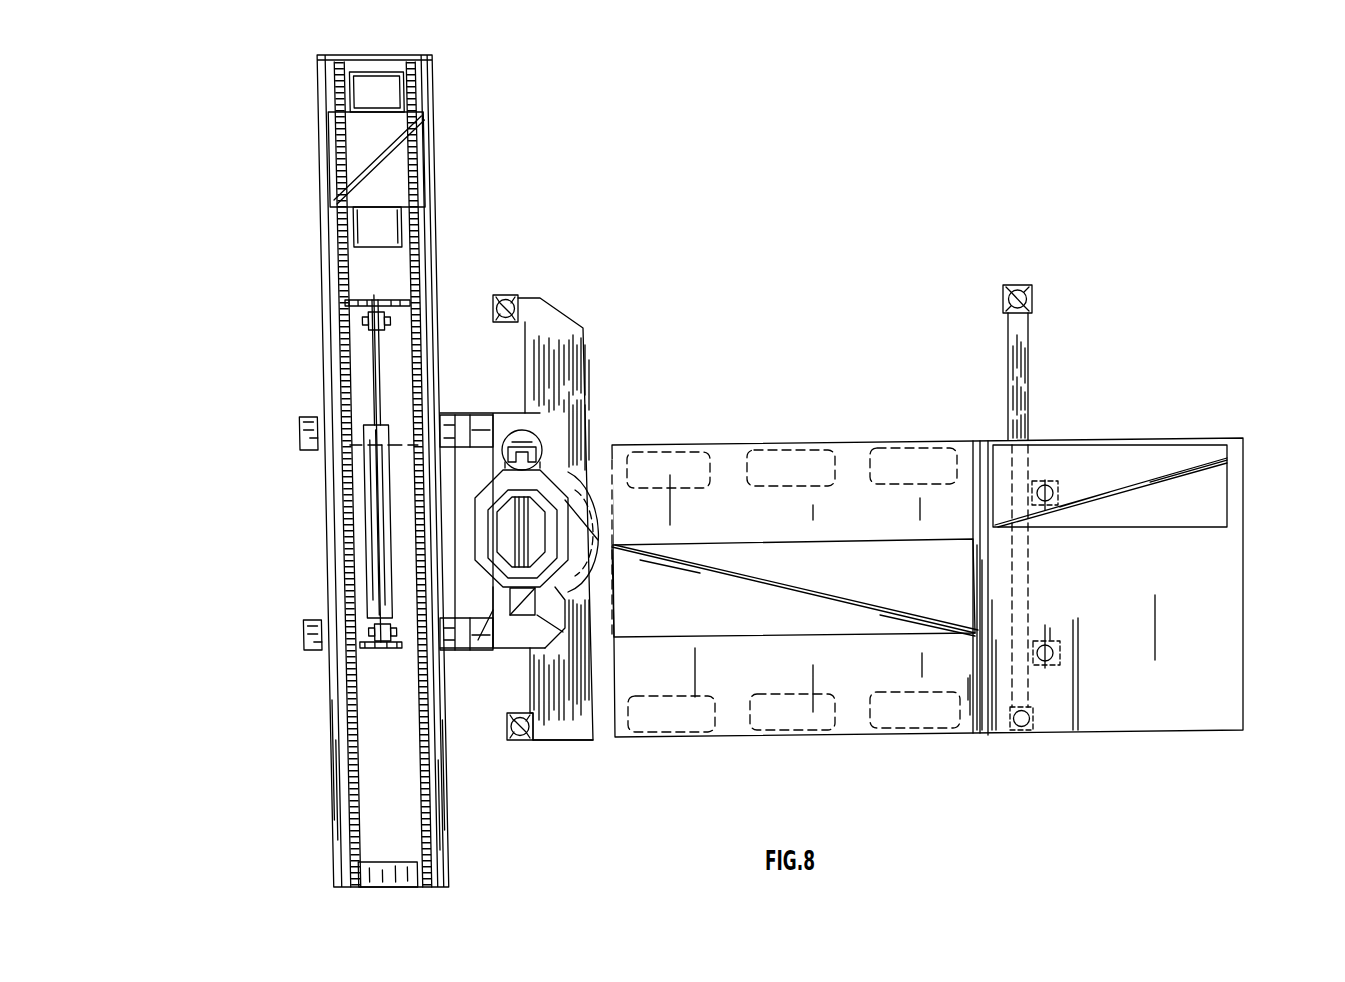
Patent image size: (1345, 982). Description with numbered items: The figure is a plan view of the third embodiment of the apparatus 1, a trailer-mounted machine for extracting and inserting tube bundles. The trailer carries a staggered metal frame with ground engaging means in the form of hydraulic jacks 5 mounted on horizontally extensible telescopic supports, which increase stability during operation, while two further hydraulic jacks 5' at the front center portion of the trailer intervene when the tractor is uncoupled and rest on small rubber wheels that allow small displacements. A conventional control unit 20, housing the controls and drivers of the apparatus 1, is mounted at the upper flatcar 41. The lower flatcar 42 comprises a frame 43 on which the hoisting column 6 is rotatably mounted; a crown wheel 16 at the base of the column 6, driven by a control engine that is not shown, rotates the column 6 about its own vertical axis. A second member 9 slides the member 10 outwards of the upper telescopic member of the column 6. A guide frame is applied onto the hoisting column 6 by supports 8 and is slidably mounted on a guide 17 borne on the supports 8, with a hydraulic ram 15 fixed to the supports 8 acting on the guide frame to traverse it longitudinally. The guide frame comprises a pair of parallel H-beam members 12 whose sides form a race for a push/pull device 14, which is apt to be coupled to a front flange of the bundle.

The apparatus 1 is at (975, 187).
The hydraulic jack 5 is at (788, 514).
The hydraulic jack 5' is at (1090, 596).
The hoisting column 6 is at (492, 578).
The support 8 is at (303, 628).
The second member 9 is at (522, 440).
The member 10 is at (560, 445).
The member 12 is at (337, 278).
The push/pull device 14 is at (415, 158).
The hydraulic ram 15 is at (383, 648).
The crown wheel 16 is at (600, 480).
The guide 17 is at (341, 395).
The control unit 20 is at (1165, 462).
The upper flatcar 41 is at (1245, 650).
The lower flatcar 42 is at (794, 567).
The frame 43 is at (577, 742).